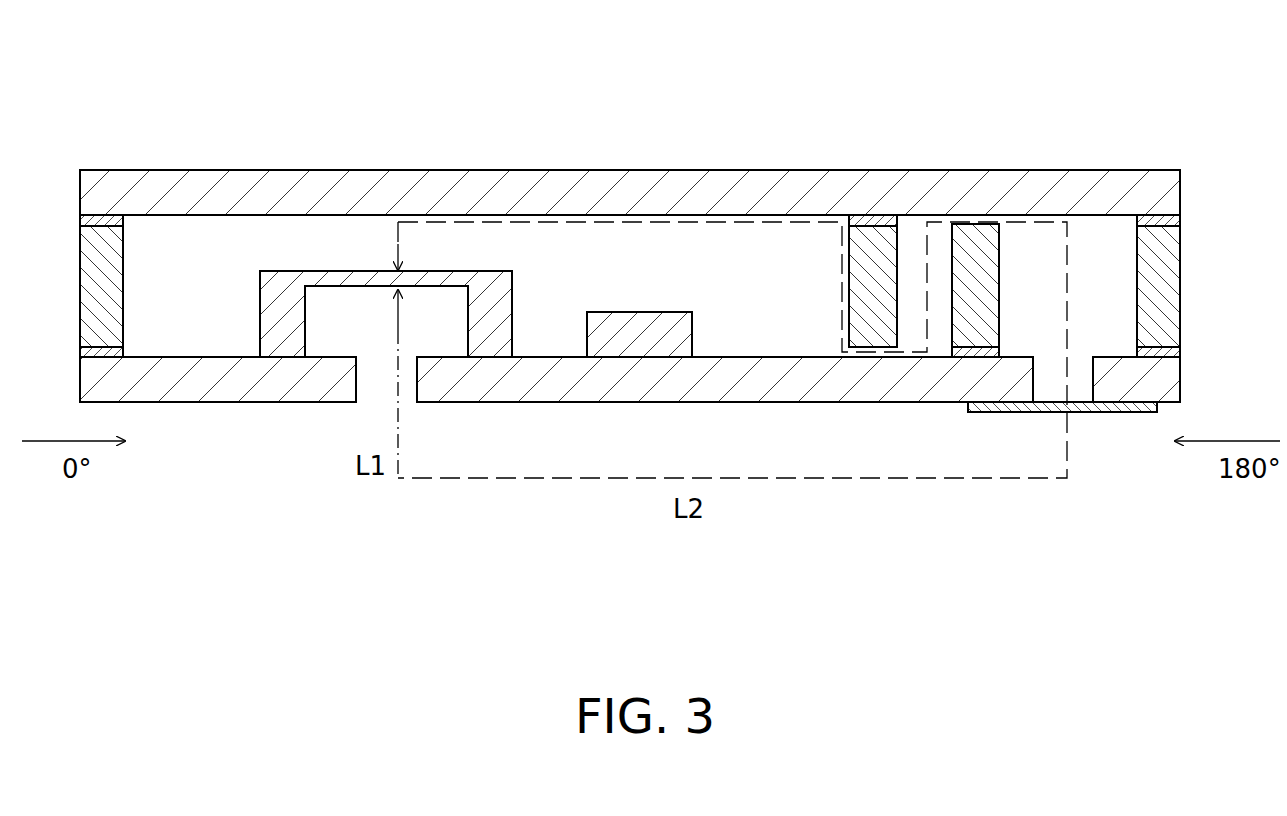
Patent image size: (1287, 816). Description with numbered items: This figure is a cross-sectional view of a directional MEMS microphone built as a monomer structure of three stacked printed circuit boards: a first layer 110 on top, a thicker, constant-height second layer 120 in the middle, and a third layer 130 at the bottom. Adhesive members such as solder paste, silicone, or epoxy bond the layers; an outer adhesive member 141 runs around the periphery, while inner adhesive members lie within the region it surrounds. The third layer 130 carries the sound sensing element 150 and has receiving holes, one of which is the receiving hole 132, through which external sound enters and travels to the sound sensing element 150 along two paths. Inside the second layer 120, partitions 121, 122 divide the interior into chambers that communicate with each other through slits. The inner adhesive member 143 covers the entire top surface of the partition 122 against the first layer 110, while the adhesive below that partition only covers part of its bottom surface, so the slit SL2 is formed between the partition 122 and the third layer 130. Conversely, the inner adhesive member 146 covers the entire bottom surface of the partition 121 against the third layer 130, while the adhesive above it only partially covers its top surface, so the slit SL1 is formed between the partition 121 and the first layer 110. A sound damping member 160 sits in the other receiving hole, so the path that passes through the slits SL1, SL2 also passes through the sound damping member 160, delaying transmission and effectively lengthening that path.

The first layer 110 is at (1158, 192).
The outer adhesive member 141 is at (1158, 220).
The second layer 120 is at (1163, 298).
The inner adhesive member 146 is at (1160, 352).
The third layer 130 is at (1163, 383).
The receiving hole 132 is at (368, 405).
The sound sensing element 150 is at (307, 278).
The partition 122 is at (860, 285).
The inner adhesive member 143 is at (875, 220).
The partition 121 is at (985, 285).
The sound damping member 160 is at (1118, 405).
The slit SL1 is at (962, 218).
The slit SL2 is at (878, 353).